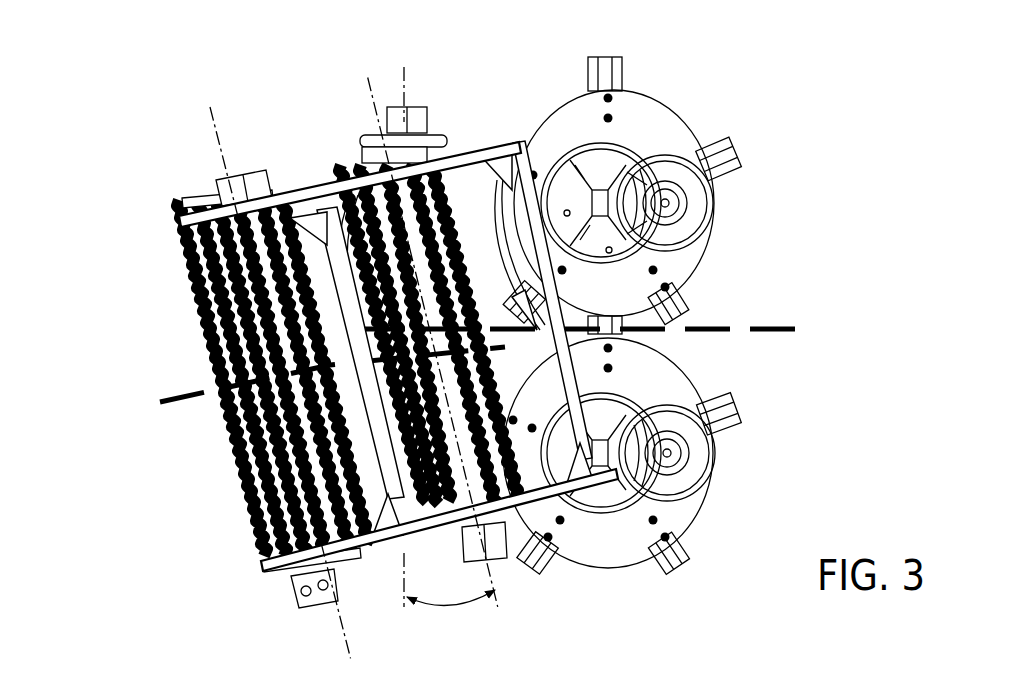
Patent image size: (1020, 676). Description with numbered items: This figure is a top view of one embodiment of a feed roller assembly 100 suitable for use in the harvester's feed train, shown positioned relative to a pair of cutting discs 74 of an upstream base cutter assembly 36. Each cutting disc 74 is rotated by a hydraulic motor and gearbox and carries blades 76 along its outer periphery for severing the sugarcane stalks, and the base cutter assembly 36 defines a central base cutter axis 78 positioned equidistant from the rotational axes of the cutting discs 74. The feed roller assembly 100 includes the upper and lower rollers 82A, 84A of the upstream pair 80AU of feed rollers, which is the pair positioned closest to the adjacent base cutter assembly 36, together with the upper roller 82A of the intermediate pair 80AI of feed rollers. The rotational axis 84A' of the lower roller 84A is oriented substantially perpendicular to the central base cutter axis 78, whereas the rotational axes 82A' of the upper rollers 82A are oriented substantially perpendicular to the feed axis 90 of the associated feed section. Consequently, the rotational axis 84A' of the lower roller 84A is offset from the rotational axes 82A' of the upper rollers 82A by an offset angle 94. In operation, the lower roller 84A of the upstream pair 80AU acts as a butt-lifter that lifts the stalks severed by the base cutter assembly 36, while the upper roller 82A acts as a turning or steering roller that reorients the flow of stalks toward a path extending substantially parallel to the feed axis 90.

The feed roller assembly 100 is at (126, 306).
The first base cutter assembly 36 is at (632, 322).
The cutting disc 74 is at (653, 117).
The blades 76 is at (606, 74).
The first central base cutter axis 78 is at (777, 337).
The intermediate pair of feed rollers 80AI is at (231, 360).
The upstream pair of feed rollers 80AU is at (340, 110).
The upper roller 82A is at (260, 334).
The rotational axis of the upper roller 82A' is at (313, 336).
The lower roller 84A is at (398, 325).
The rotational axis of the lower roller 84A' is at (434, 310).
The feed axis 90 is at (182, 405).
The offset angle 94 is at (459, 600).